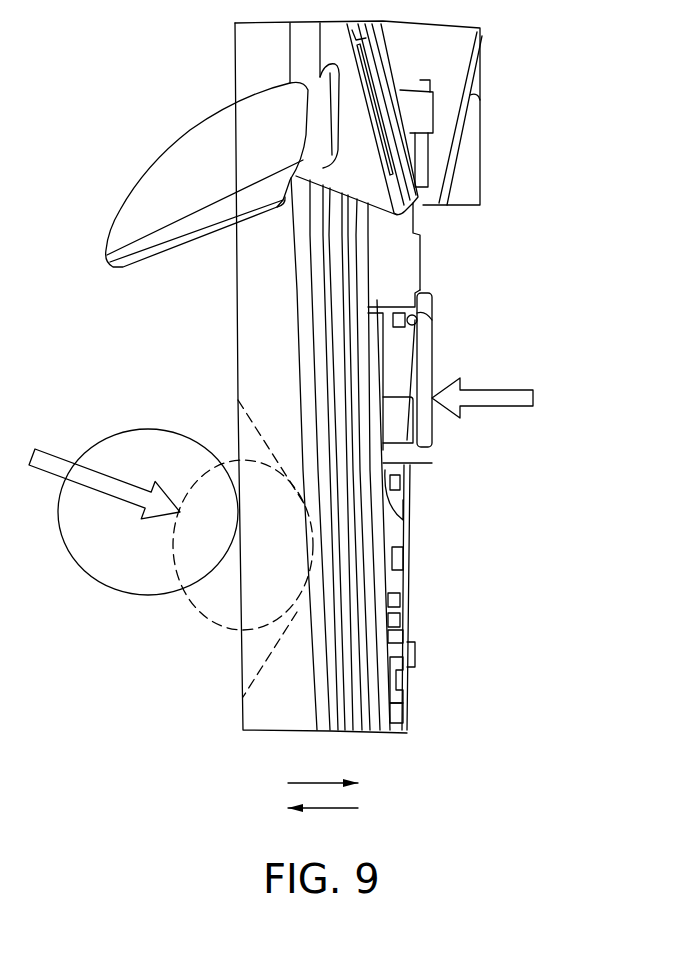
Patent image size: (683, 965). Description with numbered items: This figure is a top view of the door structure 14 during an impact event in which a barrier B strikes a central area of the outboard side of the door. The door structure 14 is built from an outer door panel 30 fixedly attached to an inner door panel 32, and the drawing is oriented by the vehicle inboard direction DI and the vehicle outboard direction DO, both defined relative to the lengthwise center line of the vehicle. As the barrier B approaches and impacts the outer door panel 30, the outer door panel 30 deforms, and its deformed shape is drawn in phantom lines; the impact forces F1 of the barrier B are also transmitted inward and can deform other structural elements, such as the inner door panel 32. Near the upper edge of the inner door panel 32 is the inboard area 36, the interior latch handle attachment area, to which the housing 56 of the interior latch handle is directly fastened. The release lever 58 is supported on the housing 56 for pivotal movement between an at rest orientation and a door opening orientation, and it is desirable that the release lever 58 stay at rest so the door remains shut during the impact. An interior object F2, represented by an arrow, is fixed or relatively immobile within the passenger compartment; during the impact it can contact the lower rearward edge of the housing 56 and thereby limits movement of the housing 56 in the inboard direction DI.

The door structure 14 is at (232, 348).
The outer door panel 30 is at (260, 664).
The inner door panel 32 is at (385, 684).
The inboard area 36 is at (380, 465).
The housing 56 is at (393, 377).
The release lever 58 is at (438, 346).
The barrier B is at (122, 432).
The forces of the barrier F1 is at (53, 453).
The interior object F2 is at (497, 408).
The vehicle inboard direction DI is at (312, 782).
The vehicle outboard direction DO is at (330, 809).